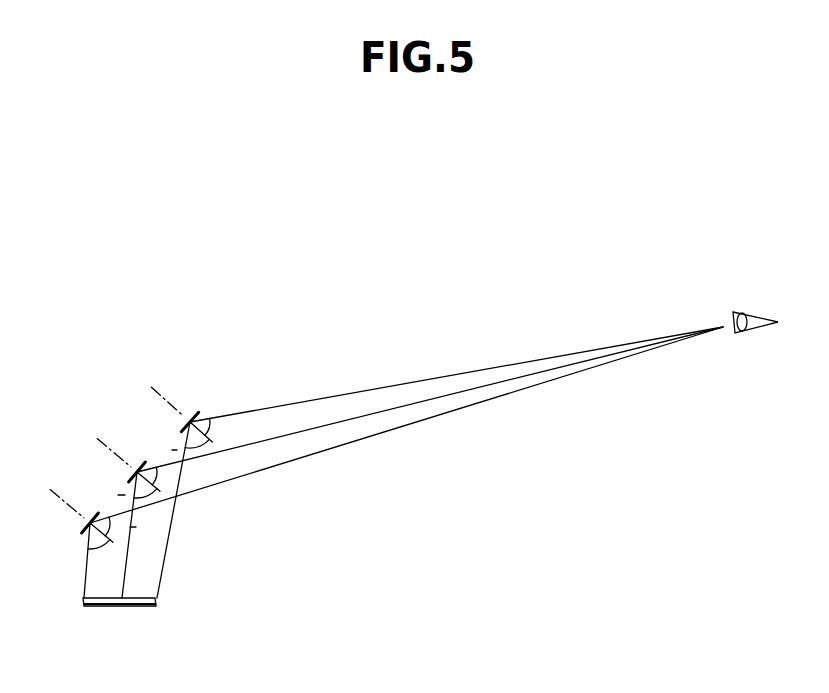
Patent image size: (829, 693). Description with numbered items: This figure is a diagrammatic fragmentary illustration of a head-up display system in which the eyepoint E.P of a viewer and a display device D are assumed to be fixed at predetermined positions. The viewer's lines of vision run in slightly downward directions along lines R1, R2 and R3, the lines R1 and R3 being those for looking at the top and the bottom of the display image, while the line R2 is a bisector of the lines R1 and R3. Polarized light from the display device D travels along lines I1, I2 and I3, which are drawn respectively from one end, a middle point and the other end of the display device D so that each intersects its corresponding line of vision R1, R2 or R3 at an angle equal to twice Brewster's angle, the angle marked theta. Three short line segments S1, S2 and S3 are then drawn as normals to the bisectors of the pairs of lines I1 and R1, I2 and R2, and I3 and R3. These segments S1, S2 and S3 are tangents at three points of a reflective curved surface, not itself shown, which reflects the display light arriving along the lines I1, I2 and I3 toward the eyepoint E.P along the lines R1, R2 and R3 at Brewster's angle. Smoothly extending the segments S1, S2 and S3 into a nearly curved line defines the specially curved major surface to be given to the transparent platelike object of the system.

The display device D is at (102, 607).
The line I1 is at (170, 532).
The line I2 is at (123, 580).
The line I3 is at (85, 578).
The line segment S1 is at (190, 420).
The line segment S2 is at (137, 470).
The line segment S3 is at (90, 521).
The line R1 is at (398, 387).
The line R2 is at (375, 417).
The line R3 is at (280, 467).
The eyepoint E.P is at (722, 329).